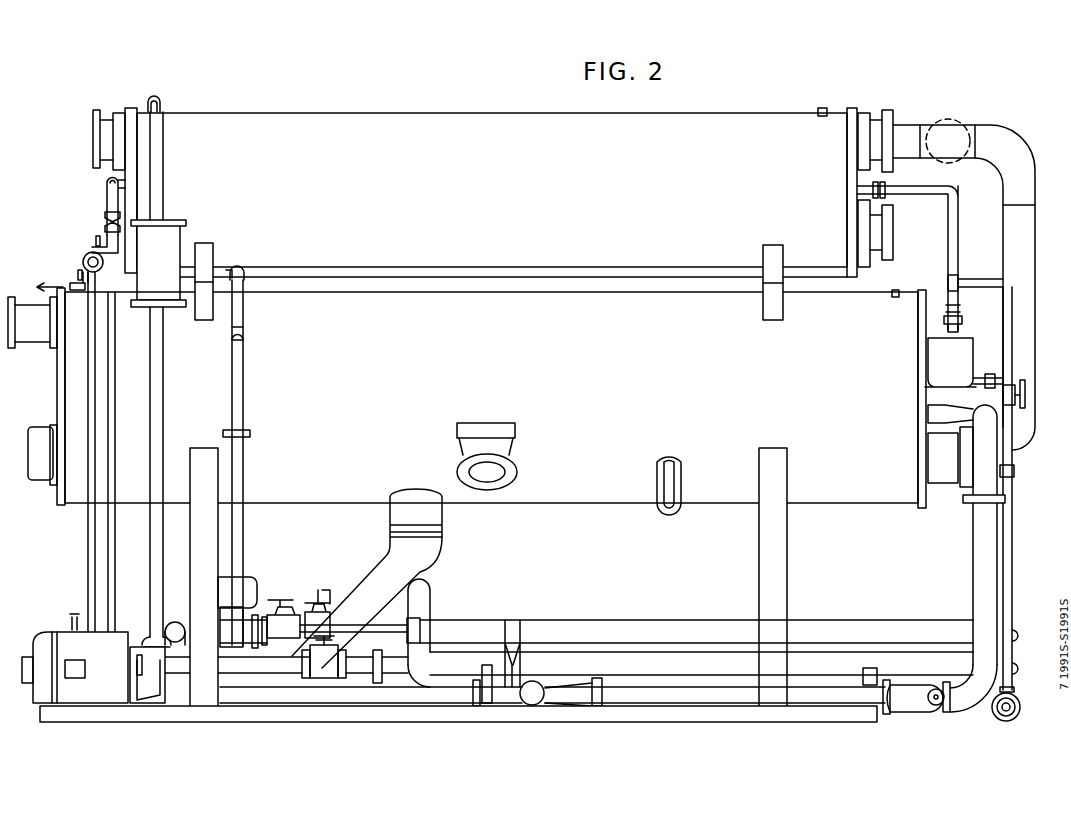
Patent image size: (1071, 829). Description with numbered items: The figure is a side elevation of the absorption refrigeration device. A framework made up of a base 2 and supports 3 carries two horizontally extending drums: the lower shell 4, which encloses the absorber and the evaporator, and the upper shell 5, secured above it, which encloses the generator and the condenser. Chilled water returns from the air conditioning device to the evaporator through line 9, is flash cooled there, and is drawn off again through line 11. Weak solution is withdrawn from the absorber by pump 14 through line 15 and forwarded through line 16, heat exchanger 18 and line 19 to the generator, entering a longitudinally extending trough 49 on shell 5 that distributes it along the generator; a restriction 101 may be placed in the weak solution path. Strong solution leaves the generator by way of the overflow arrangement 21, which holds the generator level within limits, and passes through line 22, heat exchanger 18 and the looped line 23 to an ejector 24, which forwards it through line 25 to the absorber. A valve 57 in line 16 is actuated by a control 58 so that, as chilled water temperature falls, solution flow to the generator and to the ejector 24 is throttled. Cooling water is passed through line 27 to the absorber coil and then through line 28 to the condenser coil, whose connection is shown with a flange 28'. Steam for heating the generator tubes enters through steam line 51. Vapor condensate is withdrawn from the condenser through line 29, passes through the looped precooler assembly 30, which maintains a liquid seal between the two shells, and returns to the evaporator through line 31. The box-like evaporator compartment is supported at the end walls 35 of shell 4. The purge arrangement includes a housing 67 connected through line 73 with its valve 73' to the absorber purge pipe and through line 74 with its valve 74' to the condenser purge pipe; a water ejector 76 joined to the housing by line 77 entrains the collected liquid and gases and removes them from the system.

The base 2 is at (836, 722).
The supports 3 is at (778, 316).
The shell 4 is at (322, 490).
The shell 5 is at (310, 118).
The line 9 is at (25, 330).
The line 11 is at (503, 453).
The pump 14 is at (62, 642).
The line 15 is at (375, 587).
The line 16 is at (177, 625).
The heat exchanger 18 is at (640, 632).
The line 19 is at (240, 418).
The overflow arrangement 21 is at (172, 242).
The line 22 is at (160, 415).
The line 23 is at (440, 693).
The ejector 24 is at (545, 705).
The line 25 is at (975, 575).
The line 27 is at (942, 475).
The line 28 is at (982, 284).
The flange 28' is at (86, 137).
The line 29 is at (107, 187).
The precooler assembly 30 is at (90, 380).
The line 31 is at (82, 256).
The end walls 35 is at (921, 298).
The trough 49 is at (405, 268).
The steam line 51 is at (893, 236).
The valve 57 is at (260, 613).
The control 58 is at (250, 590).
The housing 67 is at (963, 357).
The line 73 is at (1032, 488).
The valve 73' is at (1034, 385).
The line 74 is at (930, 256).
The valve 74' is at (972, 319).
The water ejector 76 is at (1002, 721).
The line 77 is at (1012, 560).
The restriction 101 is at (314, 600).